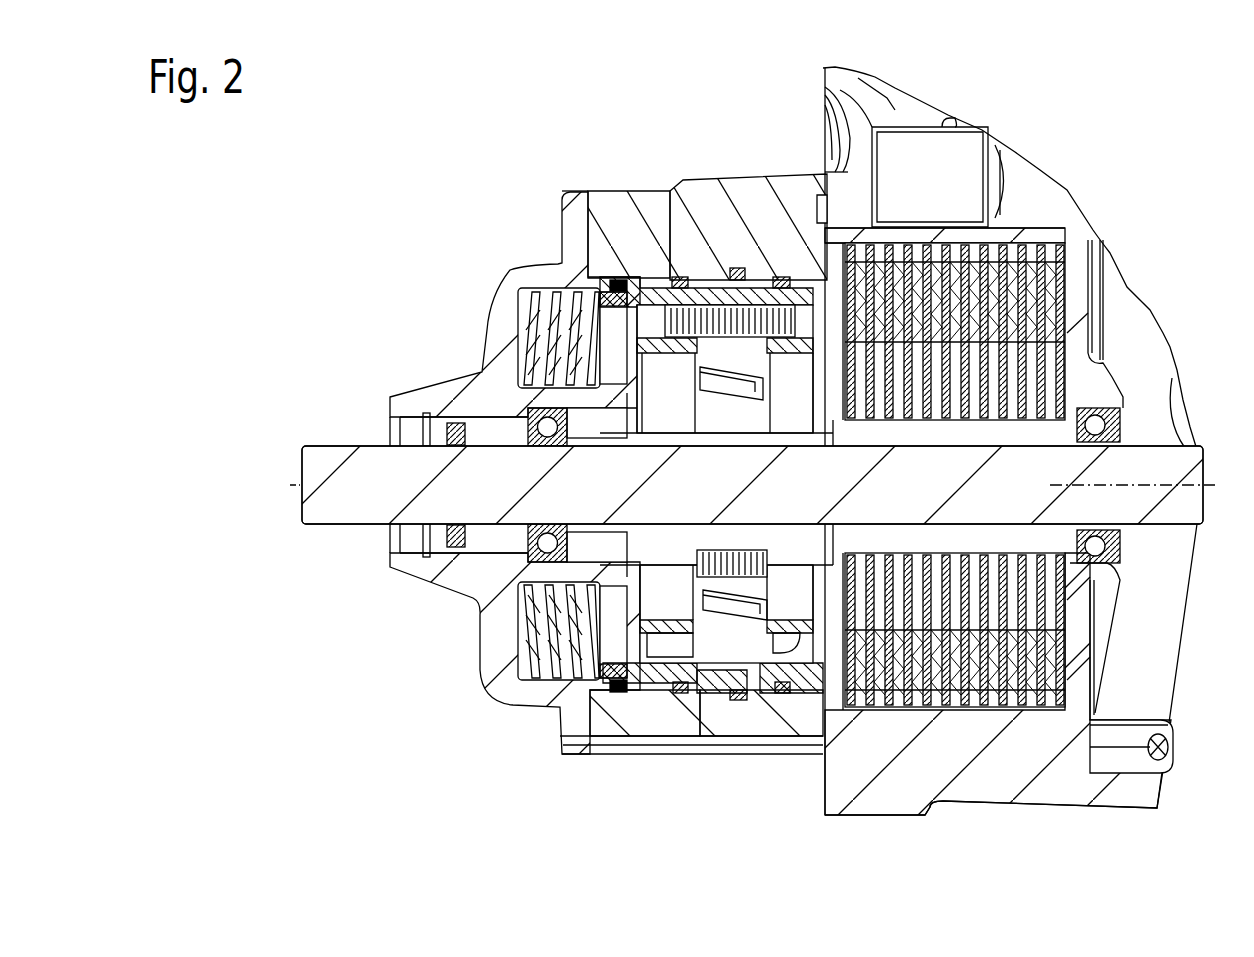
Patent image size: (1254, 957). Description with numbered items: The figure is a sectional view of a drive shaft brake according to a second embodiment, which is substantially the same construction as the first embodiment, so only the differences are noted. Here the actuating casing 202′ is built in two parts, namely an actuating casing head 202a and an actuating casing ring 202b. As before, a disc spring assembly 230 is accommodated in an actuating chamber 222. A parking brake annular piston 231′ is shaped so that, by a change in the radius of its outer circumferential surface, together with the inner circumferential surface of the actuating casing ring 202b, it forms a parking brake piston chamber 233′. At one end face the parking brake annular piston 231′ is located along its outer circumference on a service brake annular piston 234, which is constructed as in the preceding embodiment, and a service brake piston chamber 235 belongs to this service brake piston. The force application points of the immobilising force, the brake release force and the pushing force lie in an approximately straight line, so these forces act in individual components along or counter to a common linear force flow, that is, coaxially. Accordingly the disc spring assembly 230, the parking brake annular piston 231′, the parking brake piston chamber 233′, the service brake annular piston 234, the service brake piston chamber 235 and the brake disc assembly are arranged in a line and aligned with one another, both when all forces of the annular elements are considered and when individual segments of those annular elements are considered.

The actuating casing 202′ is at (462, 136).
The actuating casing head 202a is at (581, 194).
The actuating casing ring 202b is at (668, 190).
The actuating chamber 222 is at (517, 323).
The disc spring assembly 230 is at (533, 302).
The parking brake annular piston 231′ is at (623, 672).
The parking brake piston chamber 233′ is at (655, 686).
The service brake annular piston 234 is at (753, 686).
The service brake piston chamber 235 is at (760, 690).